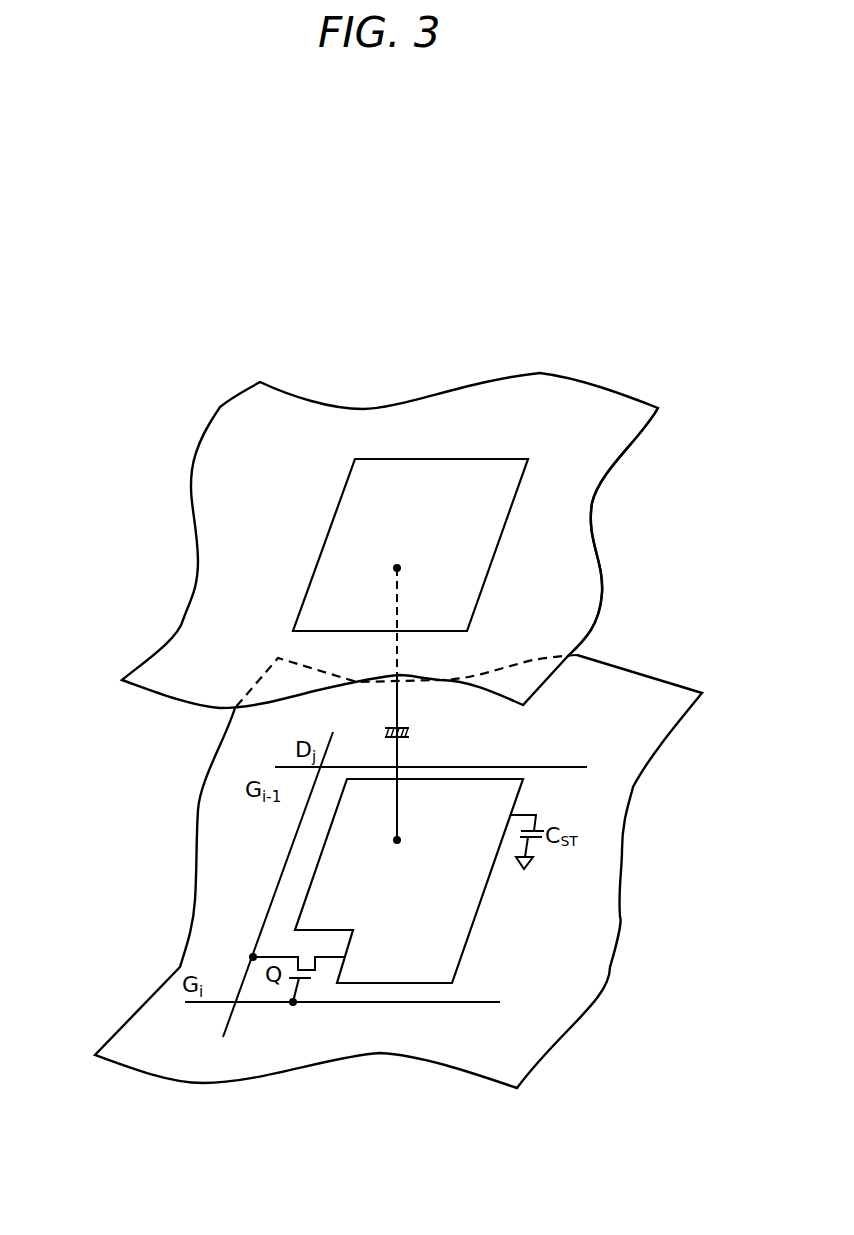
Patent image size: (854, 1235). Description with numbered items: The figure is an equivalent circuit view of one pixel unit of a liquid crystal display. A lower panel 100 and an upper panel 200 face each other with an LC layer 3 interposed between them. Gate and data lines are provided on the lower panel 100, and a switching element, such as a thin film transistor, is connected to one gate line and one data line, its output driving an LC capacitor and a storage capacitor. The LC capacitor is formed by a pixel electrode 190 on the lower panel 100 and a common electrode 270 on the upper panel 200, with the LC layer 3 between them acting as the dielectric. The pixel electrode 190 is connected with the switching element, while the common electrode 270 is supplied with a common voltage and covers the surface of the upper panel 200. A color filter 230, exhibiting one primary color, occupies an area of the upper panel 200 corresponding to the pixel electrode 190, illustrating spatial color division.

The LC layer 3 is at (113, 776).
The lower panel 100 is at (632, 853).
The pixel electrode 190 is at (472, 928).
The upper panel 200 is at (612, 567).
The color filter 230 is at (497, 560).
The common electrode 270 is at (592, 519).